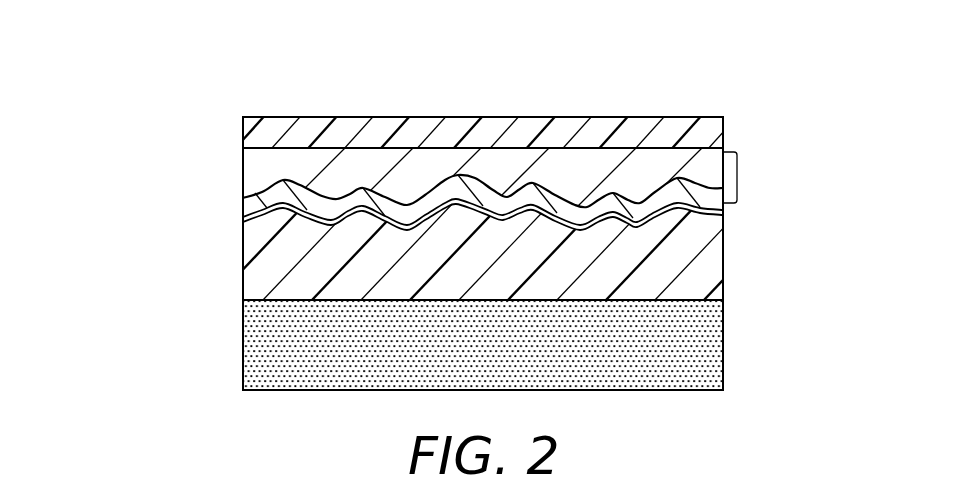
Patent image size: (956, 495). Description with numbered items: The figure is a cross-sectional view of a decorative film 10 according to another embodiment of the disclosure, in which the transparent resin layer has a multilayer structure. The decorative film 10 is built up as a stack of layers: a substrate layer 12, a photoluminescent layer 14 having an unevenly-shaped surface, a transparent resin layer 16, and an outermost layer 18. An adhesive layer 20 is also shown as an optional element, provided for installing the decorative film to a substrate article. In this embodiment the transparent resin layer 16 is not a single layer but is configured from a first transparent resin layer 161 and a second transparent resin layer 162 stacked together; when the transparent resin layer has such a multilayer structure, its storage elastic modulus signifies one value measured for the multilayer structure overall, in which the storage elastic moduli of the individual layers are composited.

The decorative film 10 is at (713, 83).
The substrate layer 12 is at (713, 258).
The photoluminescent layer 14 is at (723, 210).
The transparent resin layer 16 is at (737, 177).
The outermost layer 18 is at (712, 135).
The adhesive layer 20 is at (713, 323).
The first transparent resin layer 161 is at (250, 206).
The second transparent resin layer 162 is at (252, 182).